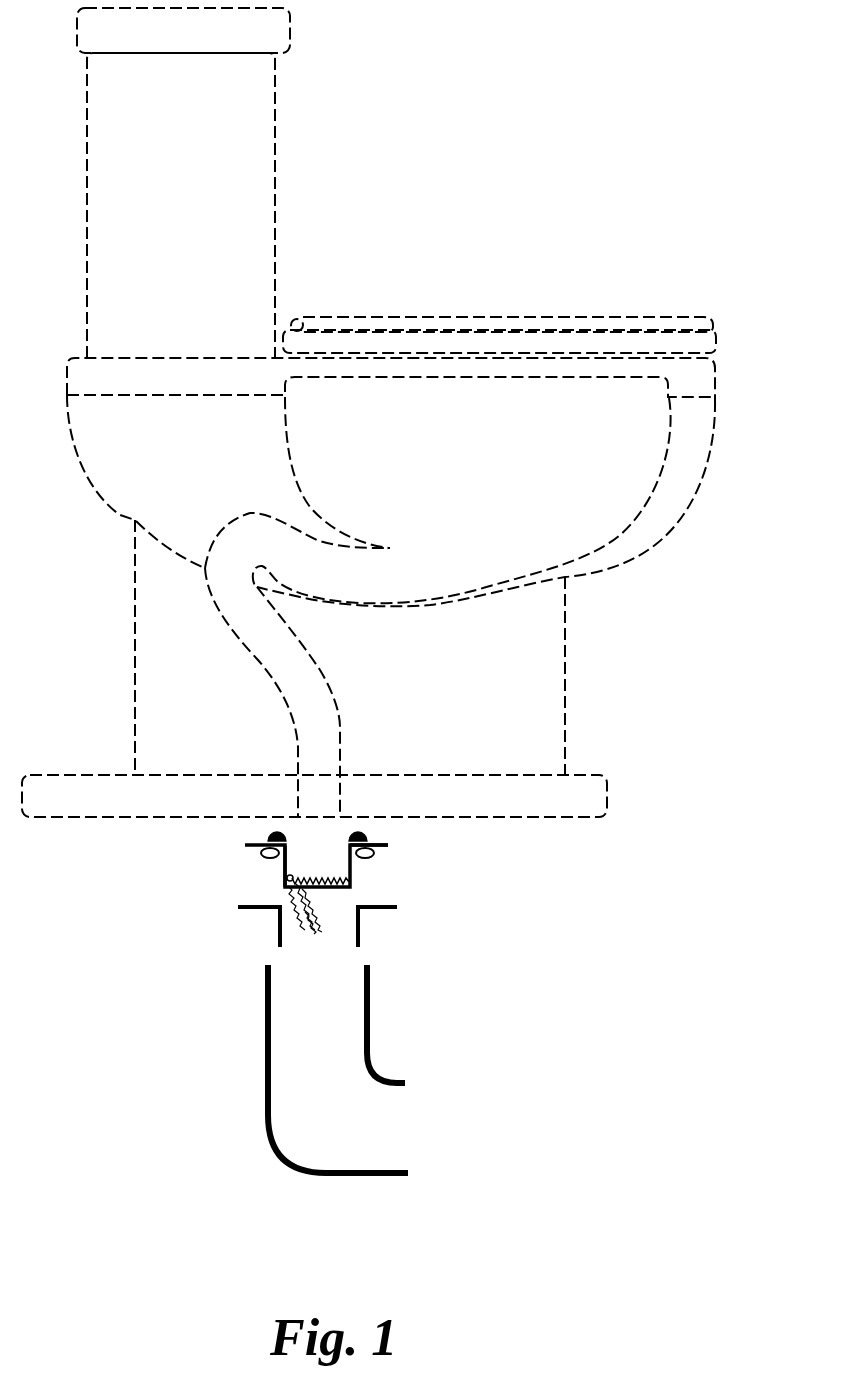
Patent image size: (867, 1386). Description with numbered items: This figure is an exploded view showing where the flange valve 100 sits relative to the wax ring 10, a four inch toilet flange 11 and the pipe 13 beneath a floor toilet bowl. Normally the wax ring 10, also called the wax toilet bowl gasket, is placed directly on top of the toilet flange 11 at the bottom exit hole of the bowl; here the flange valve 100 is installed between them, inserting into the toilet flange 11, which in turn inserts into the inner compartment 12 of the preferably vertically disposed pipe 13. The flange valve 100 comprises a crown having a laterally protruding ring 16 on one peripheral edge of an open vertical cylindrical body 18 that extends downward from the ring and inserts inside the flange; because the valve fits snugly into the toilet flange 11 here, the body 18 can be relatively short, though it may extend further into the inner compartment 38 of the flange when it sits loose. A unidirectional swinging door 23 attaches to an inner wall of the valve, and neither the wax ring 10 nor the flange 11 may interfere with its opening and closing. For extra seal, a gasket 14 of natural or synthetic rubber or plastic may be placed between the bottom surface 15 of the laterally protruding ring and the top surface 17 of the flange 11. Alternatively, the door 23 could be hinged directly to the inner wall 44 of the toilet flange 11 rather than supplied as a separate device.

The wax ring 10 is at (268, 837).
The laterally protruding ring 16 is at (247, 845).
The gasket 14 is at (263, 857).
The vertical cylindrical body 18 is at (285, 865).
The bottom surface 15 is at (388, 846).
The flange valve 100 is at (350, 873).
The inner wall 44 is at (292, 900).
The inner compartment 38 is at (330, 922).
The unidirectional swinging door 23 is at (278, 920).
The top surface 17 is at (377, 903).
The toilet flange 11 is at (360, 928).
The inner compartment 12 is at (305, 1027).
The pipe 13 is at (370, 1020).